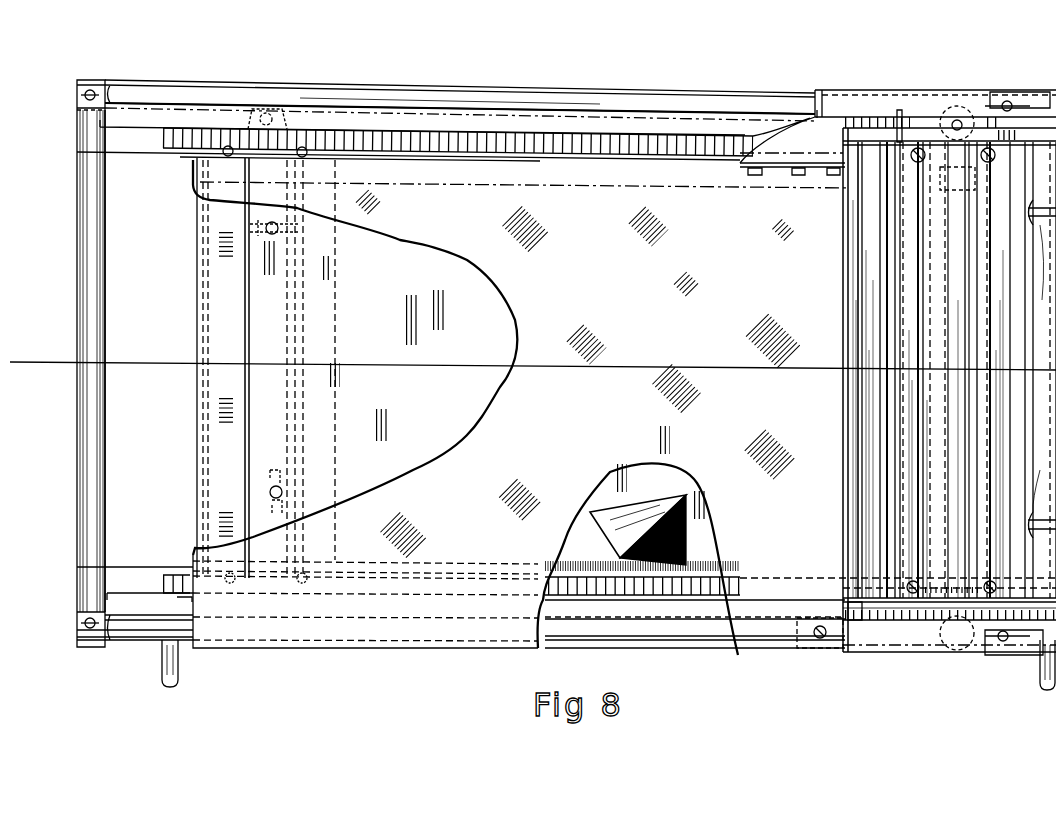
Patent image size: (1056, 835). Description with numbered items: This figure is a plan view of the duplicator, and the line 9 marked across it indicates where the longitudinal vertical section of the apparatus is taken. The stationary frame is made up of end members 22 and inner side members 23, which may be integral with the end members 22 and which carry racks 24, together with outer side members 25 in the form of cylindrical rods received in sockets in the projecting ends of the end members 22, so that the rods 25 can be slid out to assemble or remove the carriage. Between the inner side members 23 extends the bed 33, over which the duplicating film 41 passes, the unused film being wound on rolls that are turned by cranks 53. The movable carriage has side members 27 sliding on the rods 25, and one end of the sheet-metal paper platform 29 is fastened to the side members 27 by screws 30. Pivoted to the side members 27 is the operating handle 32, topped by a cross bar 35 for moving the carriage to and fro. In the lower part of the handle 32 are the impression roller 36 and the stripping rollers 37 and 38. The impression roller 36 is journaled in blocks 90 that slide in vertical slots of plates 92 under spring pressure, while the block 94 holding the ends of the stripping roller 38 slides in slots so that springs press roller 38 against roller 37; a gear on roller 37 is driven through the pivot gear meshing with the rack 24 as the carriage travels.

The section line 9 is at (18, 370).
The end members 22 is at (88, 259).
The inner side members 23 is at (121, 146).
The racks 24 is at (177, 135).
The outer side members 25 is at (165, 90).
The side members 27 is at (920, 108).
The platform 29 is at (515, 402).
The screws 30 is at (833, 178).
The operating handle 32 is at (1010, 116).
The bed 33 is at (648, 577).
The cross bar 35 is at (1037, 280).
The impression roller 36 is at (858, 415).
The stripping roller 37 is at (947, 455).
The stripping roller 38 is at (965, 400).
The duplicating film 41 is at (588, 522).
The cranks 53 is at (167, 663).
The blocks 90 is at (867, 608).
The plates 92 is at (952, 122).
The block 94 is at (918, 108).